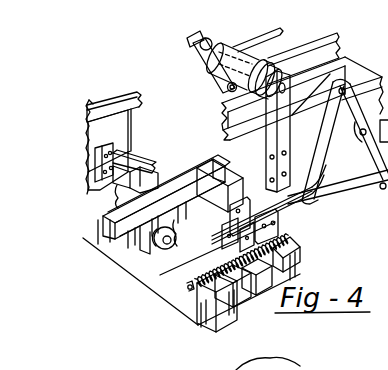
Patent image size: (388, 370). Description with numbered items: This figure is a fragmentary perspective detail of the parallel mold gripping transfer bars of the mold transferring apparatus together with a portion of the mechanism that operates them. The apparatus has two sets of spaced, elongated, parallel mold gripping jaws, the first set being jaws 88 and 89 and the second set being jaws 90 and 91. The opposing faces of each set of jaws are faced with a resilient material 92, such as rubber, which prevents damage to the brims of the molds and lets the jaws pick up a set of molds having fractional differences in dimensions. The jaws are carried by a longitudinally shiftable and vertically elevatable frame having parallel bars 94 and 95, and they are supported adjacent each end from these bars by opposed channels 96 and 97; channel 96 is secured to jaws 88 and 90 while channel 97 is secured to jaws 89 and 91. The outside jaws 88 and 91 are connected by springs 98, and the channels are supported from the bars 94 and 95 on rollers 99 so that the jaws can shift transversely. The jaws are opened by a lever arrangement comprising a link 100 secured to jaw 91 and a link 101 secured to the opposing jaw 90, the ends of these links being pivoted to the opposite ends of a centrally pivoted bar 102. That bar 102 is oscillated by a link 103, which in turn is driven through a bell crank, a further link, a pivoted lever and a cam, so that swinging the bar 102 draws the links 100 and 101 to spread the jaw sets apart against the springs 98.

The mold gripping jaw 88 is at (203, 308).
The mold gripping jaw 89 is at (229, 313).
The mold gripping jaw 90 is at (236, 271).
The mold gripping jaw 91 is at (299, 266).
The resilient material 92 is at (203, 328).
The parallel bar 94 is at (143, 110).
The parallel bar 95 is at (359, 86).
The channel 96 is at (89, 103).
The channel 97 is at (127, 142).
The spring 98 is at (277, 225).
The roller 99 is at (181, 237).
The link 100 is at (309, 205).
The link 101 is at (358, 181).
The centrally pivoted bar 102 is at (369, 159).
The link 103 is at (293, 45).